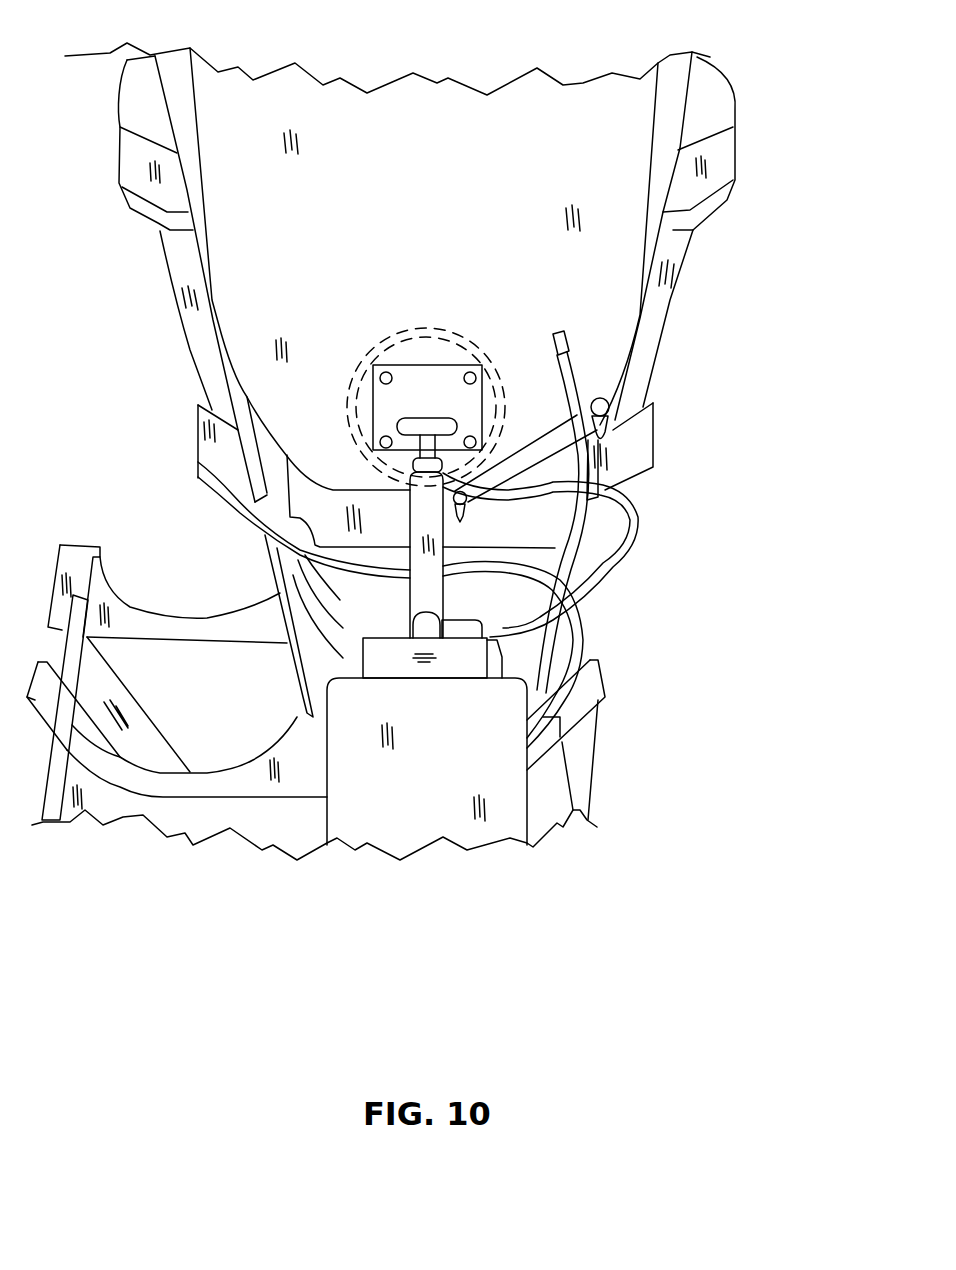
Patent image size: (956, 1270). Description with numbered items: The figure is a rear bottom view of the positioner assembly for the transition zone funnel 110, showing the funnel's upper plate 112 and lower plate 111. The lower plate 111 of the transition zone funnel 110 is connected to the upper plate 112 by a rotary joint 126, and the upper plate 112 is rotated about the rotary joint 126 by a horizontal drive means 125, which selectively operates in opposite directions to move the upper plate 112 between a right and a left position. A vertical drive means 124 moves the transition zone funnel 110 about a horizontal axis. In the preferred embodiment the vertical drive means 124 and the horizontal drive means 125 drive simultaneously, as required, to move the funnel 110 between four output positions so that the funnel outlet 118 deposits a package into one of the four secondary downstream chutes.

The transition zone funnel 110 is at (325, 515).
The lower plate 111 is at (440, 272).
The upper plate 112 is at (472, 578).
The transition zone funnel outlet 118 is at (313, 697).
The vertical drive means 124 is at (433, 583).
The horizontal drive means 125 is at (517, 465).
The rotary joint 126 is at (507, 405).